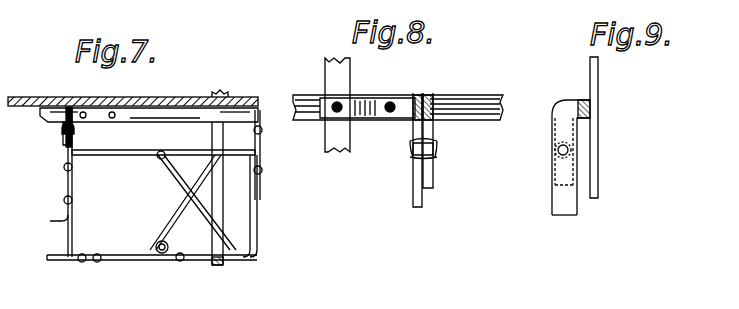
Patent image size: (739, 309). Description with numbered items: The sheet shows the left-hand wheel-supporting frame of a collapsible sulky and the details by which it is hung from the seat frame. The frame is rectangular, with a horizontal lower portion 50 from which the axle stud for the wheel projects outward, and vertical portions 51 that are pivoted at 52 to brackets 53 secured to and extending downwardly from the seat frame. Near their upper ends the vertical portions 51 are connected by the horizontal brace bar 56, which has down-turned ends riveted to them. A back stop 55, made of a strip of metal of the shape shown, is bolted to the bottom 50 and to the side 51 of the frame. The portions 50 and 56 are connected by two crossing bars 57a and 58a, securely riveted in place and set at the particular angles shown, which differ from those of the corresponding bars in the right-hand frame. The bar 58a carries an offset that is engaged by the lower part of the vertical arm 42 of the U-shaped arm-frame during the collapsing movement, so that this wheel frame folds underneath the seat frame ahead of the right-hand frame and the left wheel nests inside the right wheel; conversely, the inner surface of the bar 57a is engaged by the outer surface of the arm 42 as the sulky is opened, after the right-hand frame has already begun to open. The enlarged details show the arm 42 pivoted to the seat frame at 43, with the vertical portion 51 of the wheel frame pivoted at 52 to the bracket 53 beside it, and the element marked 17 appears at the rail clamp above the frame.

In FIG. 7, the rail clamp 17 is at (68, 108).
In FIG. 7, the vertical arm 42 is at (223, 222).
In FIG. 8, the vertical arm 42 is at (318, 96).
In FIG. 9, the vertical arm 42 is at (588, 95).
In FIG. 8, the pivot 43 is at (348, 98).
In FIG. 7, the horizontal lower portion 50 is at (117, 260).
In FIG. 7, the vertical portion 51 is at (257, 212).
In FIG. 8, the vertical portion 51 is at (422, 205).
In FIG. 9, the vertical portion 51 is at (565, 213).
In FIG. 8, the pivot 52 is at (437, 152).
In FIG. 7, the bracket 53 is at (258, 140).
In FIG. 8, the bracket 53 is at (433, 131).
In FIG. 9, the bracket 53 is at (566, 100).
In FIG. 7, the back stop 55 is at (60, 232).
In FIG. 7, the horizontal brace bar 56 is at (163, 140).
In FIG. 7, the bar 57a is at (167, 232).
In FIG. 7, the bar 58a is at (166, 160).